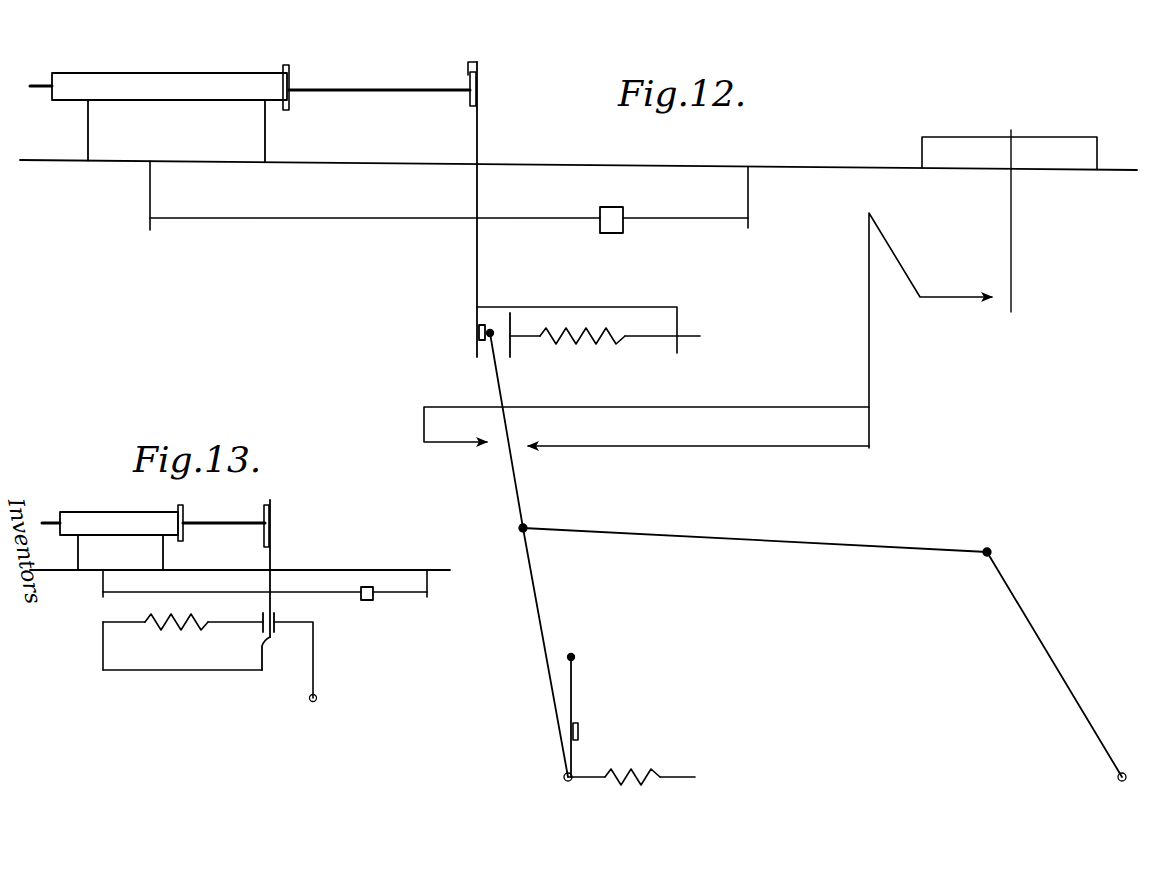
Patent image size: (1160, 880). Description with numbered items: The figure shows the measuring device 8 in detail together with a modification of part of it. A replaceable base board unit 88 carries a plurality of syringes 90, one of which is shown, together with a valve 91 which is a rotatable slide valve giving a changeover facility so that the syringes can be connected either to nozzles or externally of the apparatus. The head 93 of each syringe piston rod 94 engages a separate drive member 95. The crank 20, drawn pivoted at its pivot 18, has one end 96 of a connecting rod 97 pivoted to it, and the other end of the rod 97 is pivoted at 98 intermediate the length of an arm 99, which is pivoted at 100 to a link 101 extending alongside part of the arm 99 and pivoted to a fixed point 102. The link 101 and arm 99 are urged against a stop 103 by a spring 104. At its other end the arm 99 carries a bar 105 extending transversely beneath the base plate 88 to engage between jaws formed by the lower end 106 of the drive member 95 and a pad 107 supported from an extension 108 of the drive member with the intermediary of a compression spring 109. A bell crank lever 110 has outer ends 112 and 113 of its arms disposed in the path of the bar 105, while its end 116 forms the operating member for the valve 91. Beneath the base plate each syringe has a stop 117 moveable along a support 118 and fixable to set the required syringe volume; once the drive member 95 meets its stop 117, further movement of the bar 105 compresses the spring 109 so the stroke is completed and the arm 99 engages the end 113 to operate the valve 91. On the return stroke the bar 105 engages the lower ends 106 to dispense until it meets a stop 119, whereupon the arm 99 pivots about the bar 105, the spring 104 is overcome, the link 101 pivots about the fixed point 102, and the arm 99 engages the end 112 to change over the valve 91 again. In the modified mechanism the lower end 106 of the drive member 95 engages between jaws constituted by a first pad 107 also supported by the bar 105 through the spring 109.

In FIG. 12, the measuring device 8 is at (540, 110).
In FIG. 12, the pivot pin 18 is at (1117, 778).
In FIG. 12, the crank 20 is at (1046, 656).
In FIG. 12, the base board unit 88 is at (722, 165).
In FIG. 13, the base board unit 88 is at (406, 570).
In FIG. 12, the syringe 90 is at (167, 100).
In FIG. 13, the syringe 90 is at (109, 523).
In FIG. 12, the valve 91 is at (961, 137).
In FIG. 12, the head 93 is at (478, 98).
In FIG. 13, the head 93 is at (272, 514).
In FIG. 12, the syringe piston rod 94 is at (372, 93).
In FIG. 13, the syringe piston rod 94 is at (233, 528).
In FIG. 12, the drive member 95 is at (478, 143).
In FIG. 13, the drive member 95 is at (272, 560).
In FIG. 12, the end of connecting rod 96 is at (988, 548).
In FIG. 12, the connecting rod 97 is at (818, 542).
In FIG. 12, the pivot 98 is at (521, 528).
In FIG. 12, the arm 99 is at (540, 607).
In FIG. 12, the pivot 100 is at (565, 778).
In FIG. 12, the link 101 is at (573, 690).
In FIG. 12, the fixed point 102 is at (576, 657).
In FIG. 12, the stop 103 is at (580, 728).
In FIG. 12, the spring 104 is at (649, 772).
In FIG. 12, the bar 105 is at (492, 326).
In FIG. 13, the bar 105 is at (317, 697).
In FIG. 12, the lower end of drive member 106 is at (478, 334).
In FIG. 13, the lower end of drive member 106 is at (270, 668).
In FIG. 12, the pad 107 is at (512, 320).
In FIG. 13, the pad 107 is at (276, 620).
In FIG. 12, the extension 108 is at (616, 307).
In FIG. 13, the extension 108 is at (260, 634).
In FIG. 12, the compression spring 109 is at (603, 340).
In FIG. 13, the compression spring 109 is at (183, 642).
In FIG. 12, the bell crank lever 110 is at (832, 408).
In FIG. 12, the outer end of arm 112 is at (486, 440).
In FIG. 12, the outer end of arm 113 is at (530, 443).
In FIG. 12, the end of bell crank lever arm 116 is at (979, 297).
In FIG. 12, the stop 117 is at (613, 203).
In FIG. 13, the stop 117 is at (367, 601).
In FIG. 12, the support 118 is at (687, 218).
In FIG. 13, the support 118 is at (411, 598).
In FIG. 12, the stop 119 is at (476, 307).